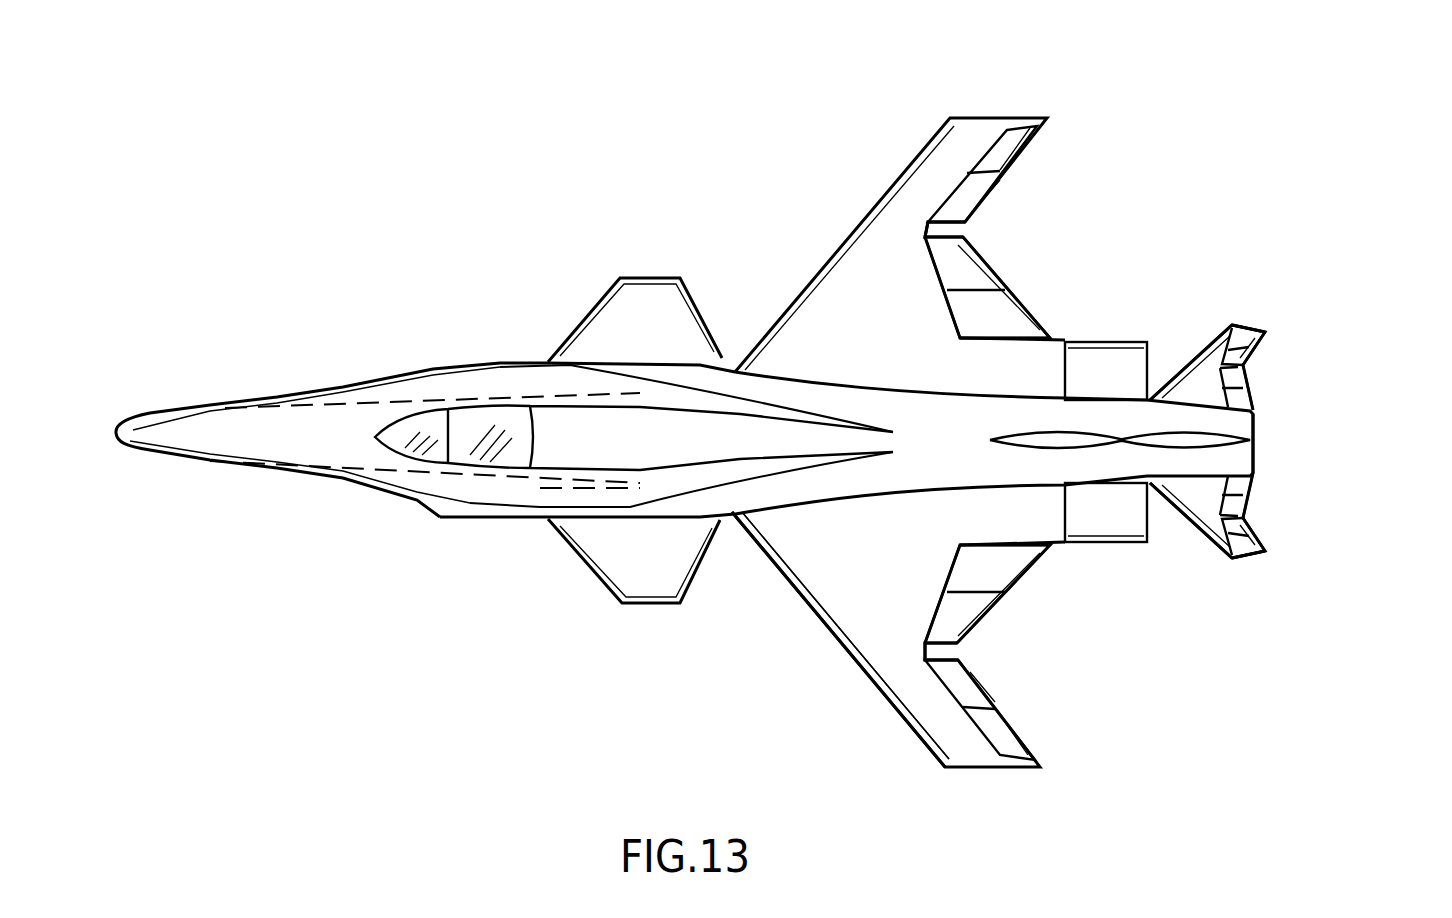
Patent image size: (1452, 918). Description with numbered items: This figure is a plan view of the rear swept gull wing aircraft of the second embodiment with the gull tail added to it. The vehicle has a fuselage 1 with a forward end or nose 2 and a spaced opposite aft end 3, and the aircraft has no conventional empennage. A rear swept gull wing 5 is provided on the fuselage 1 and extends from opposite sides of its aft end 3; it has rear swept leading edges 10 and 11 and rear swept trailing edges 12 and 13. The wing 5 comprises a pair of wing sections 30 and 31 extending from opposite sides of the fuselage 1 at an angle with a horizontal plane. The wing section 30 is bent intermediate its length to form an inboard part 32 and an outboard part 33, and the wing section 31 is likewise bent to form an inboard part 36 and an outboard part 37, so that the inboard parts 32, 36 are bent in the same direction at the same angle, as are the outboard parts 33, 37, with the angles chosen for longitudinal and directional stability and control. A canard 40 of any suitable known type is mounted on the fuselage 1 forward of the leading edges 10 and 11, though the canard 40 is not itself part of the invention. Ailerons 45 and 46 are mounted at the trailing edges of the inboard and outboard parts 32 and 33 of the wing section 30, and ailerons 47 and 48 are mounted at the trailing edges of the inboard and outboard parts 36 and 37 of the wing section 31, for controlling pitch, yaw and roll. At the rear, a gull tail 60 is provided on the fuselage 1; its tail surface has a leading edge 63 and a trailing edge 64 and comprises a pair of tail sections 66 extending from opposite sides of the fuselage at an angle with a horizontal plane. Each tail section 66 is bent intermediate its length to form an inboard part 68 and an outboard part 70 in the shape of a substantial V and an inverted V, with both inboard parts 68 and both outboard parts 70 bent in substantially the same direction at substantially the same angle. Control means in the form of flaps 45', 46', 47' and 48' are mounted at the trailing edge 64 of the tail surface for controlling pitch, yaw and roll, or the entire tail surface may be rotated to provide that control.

The fuselage 1 is at (730, 507).
The nose 2 is at (145, 447).
The aft end 3 is at (1258, 426).
The rear swept gull wing 5 is at (843, 588).
The rear swept leading edge 10 is at (941, 206).
The rear swept leading edge 11 is at (927, 643).
The rear swept trailing edge 12 is at (960, 228).
The rear swept trailing edge 13 is at (960, 652).
The wing section 30 is at (941, 206).
The wing section 31 is at (927, 643).
The inboard part 32 is at (798, 318).
The outboard part 33 is at (990, 130).
The inboard part 36 is at (808, 563).
The outboard part 37 is at (938, 725).
The canard 40 is at (625, 560).
The aileron 45 is at (1012, 287).
The aileron 46 is at (1057, 166).
The aileron 47 is at (1015, 594).
The aileron 48 is at (1043, 713).
The gull tail 60 is at (1277, 444).
The tail leading edge 63 is at (1190, 362).
The tail trailing edge 64 is at (1252, 368).
The tail section 66 is at (1276, 444).
The inboard part 68 is at (1214, 401).
The outboard part 70 is at (1230, 323).
The flap 45' is at (1334, 381).
The flap 46' is at (1332, 332).
The flap 47' is at (1307, 494).
The flap 48' is at (1314, 543).